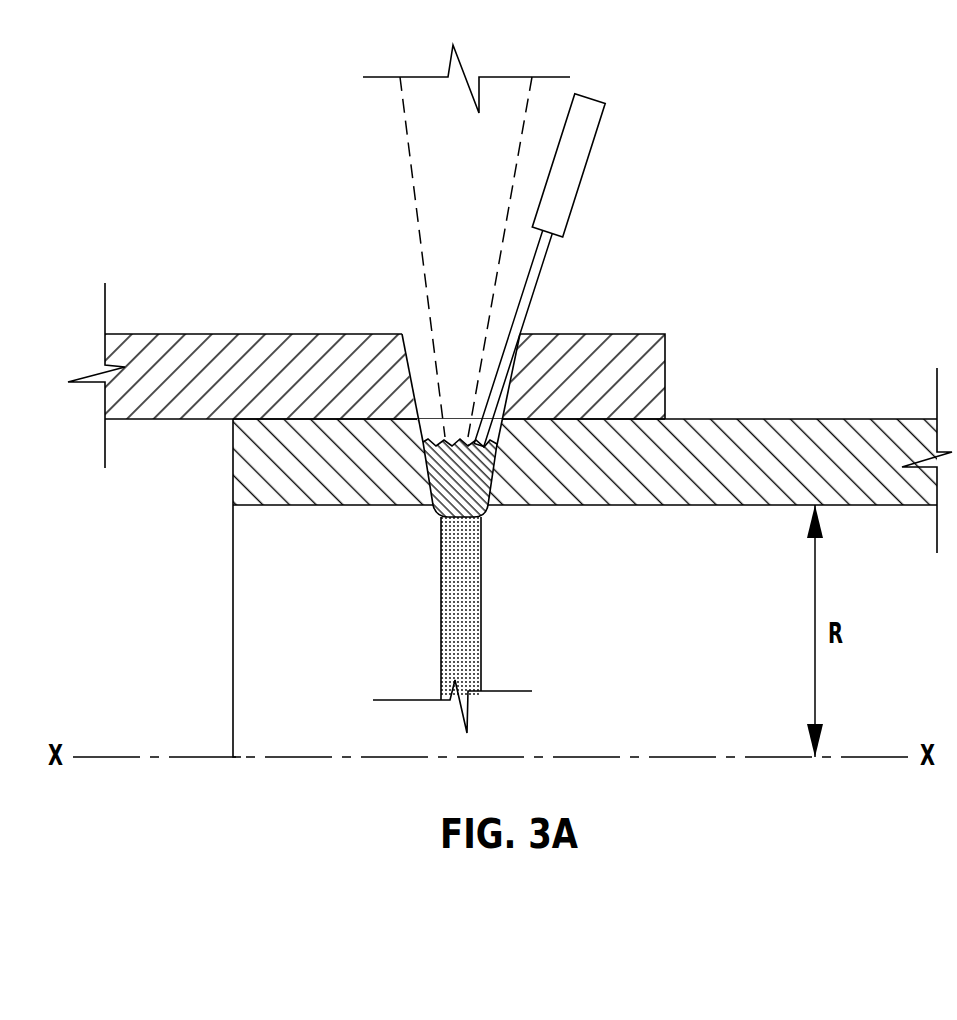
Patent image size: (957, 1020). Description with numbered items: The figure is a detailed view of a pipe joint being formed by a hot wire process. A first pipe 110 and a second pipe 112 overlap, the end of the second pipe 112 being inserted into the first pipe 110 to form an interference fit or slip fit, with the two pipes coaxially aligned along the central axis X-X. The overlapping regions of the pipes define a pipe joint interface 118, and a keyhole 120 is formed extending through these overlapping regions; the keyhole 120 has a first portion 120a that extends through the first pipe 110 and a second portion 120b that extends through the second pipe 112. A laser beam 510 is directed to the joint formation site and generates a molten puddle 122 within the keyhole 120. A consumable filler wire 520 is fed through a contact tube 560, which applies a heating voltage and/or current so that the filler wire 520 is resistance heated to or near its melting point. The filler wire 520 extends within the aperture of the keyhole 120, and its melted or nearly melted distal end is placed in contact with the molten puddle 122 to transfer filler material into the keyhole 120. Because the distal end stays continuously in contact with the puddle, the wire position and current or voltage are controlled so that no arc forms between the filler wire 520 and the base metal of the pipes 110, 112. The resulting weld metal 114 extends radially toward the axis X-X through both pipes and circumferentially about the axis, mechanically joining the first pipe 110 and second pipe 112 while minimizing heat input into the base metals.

The first pipe 110 is at (157, 334).
The second pipe 112 is at (835, 419).
The weld metal 114 is at (467, 483).
The pipe joint interface 118 is at (288, 418).
The keyhole 120 is at (410, 320).
The first portion of the keyhole 120a is at (418, 360).
The second portion of the keyhole 120b is at (500, 418).
The molten puddle 122 is at (452, 442).
The laser beam 510 is at (405, 128).
The filler wire 520 is at (535, 278).
The contact tube 560 is at (572, 152).